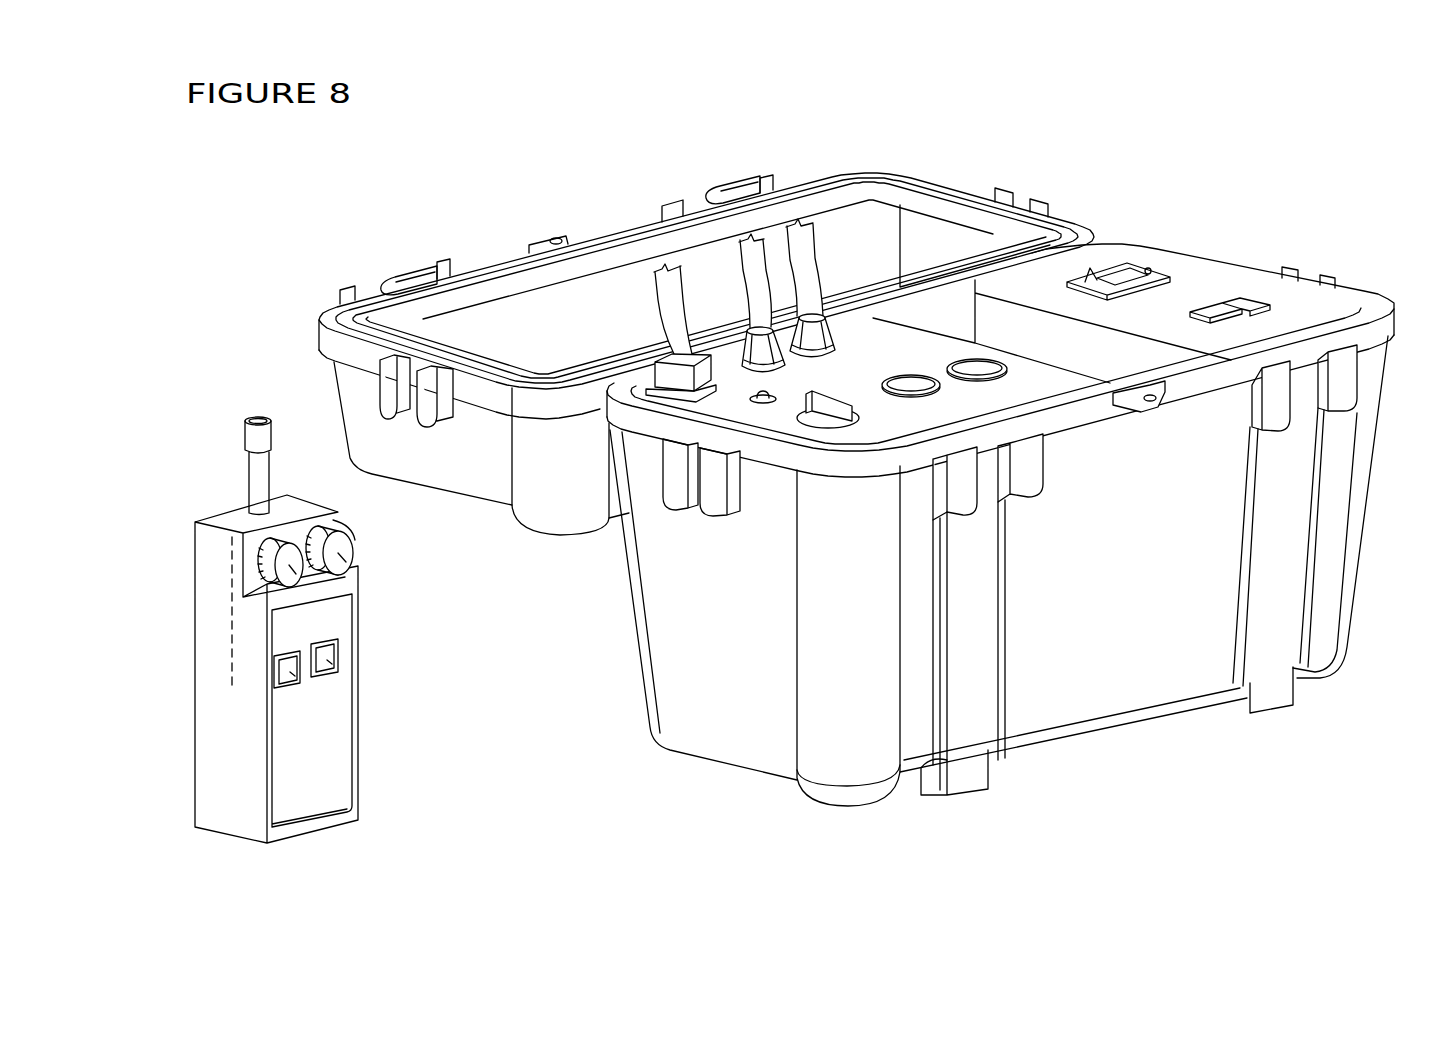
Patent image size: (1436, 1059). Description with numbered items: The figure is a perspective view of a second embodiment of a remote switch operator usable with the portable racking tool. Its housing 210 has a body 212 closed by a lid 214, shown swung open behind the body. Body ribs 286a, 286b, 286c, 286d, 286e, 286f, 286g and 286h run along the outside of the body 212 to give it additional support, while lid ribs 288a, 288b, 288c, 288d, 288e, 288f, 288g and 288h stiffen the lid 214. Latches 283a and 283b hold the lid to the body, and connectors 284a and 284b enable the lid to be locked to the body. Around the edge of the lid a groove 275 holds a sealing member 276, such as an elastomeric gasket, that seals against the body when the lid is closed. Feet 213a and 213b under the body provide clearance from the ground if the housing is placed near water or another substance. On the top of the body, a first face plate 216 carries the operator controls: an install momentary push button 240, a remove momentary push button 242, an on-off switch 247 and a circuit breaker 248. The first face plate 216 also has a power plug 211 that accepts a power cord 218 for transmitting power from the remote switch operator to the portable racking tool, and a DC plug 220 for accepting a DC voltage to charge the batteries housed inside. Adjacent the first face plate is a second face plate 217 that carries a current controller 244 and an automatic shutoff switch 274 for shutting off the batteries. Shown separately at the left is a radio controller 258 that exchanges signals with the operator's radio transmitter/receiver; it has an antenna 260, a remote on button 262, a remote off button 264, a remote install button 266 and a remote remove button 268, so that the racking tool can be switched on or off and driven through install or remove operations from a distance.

The housing 210 is at (1203, 158).
The power plug 211 is at (750, 347).
The body 212 is at (1140, 242).
The foot 213a is at (968, 778).
The foot 213b is at (1270, 700).
The lid 214 is at (855, 175).
The first face plate 216 is at (1037, 373).
The second face plate 217 is at (1200, 275).
The power cord 218 is at (750, 292).
The DC plug 220 is at (660, 374).
The install momentary push button 240 is at (912, 385).
The remove momentary push button 242 is at (977, 372).
The current controller 244 is at (1068, 284).
The on-off switch 247 is at (827, 395).
The circuit breaker 248 is at (755, 392).
The radio controller 258 is at (219, 497).
The antenna 260 is at (253, 438).
The remote on button 262 is at (333, 553).
The remote off button 264 is at (263, 603).
The remote install button 266 is at (292, 673).
The remote remove button 268 is at (342, 671).
The automatic shutoff switch 274 is at (1207, 317).
The groove 275 is at (497, 261).
The sealing member 276 is at (323, 307).
The latch 283a is at (413, 263).
The latch 283b is at (736, 177).
The connector 284a is at (556, 239).
The connector 284b is at (1150, 395).
The body rib 286a is at (667, 458).
The body rib 286b is at (700, 483).
The body rib 286c is at (957, 505).
The body rib 286d is at (1020, 487).
The body rib 286e is at (1273, 420).
The body rib 286f is at (1333, 405).
The body rib 286g is at (1328, 280).
The body rib 286h is at (1288, 275).
The lid rib 288a is at (417, 410).
The lid rib 288b is at (378, 380).
The lid rib 288c is at (350, 287).
The lid rib 288d is at (449, 270).
The lid rib 288e is at (670, 203).
The lid rib 288f is at (771, 182).
The lid rib 288g is at (1000, 197).
The lid rib 288h is at (1040, 200).